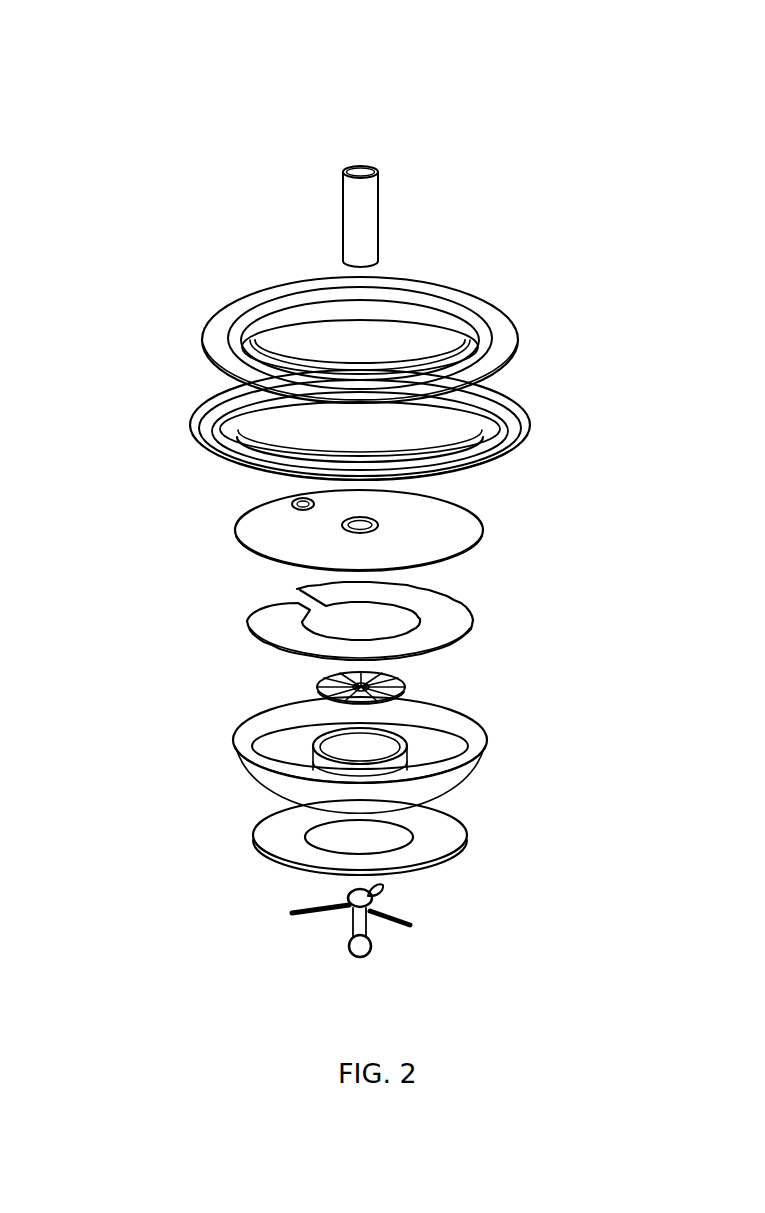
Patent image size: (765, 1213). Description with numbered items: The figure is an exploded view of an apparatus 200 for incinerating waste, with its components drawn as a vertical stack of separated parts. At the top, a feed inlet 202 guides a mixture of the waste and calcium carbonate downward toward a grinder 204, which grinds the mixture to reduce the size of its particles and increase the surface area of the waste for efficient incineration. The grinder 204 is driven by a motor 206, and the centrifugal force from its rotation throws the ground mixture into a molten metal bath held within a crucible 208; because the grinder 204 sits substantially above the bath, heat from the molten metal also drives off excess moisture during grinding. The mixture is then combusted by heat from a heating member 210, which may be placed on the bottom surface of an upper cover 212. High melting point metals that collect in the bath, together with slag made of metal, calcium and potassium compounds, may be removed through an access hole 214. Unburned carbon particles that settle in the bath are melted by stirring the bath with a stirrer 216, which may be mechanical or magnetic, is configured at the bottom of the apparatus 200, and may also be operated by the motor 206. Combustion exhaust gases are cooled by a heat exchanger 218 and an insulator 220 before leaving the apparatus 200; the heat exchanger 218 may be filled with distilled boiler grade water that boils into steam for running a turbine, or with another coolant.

The apparatus 200 is at (237, 58).
The feed inlet 202 is at (378, 214).
The grinder 204 is at (410, 678).
The motor 206 is at (413, 919).
The crucible 208 is at (460, 735).
The heating member 210 is at (457, 598).
The upper cover 212 is at (361, 508).
The access hole 214 is at (290, 502).
The stirrer 216 is at (447, 837).
The heat exchanger 218 is at (530, 415).
The insulator 220 is at (513, 312).